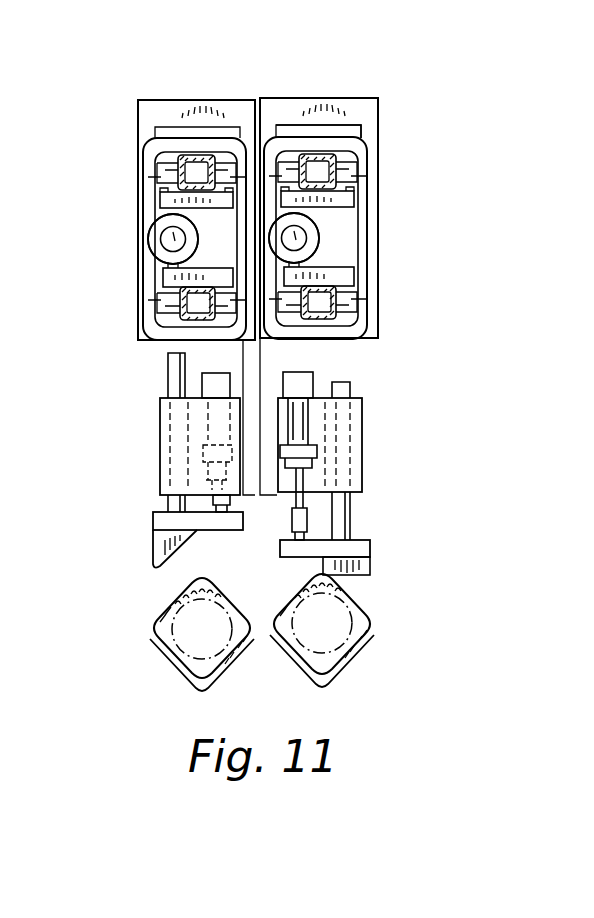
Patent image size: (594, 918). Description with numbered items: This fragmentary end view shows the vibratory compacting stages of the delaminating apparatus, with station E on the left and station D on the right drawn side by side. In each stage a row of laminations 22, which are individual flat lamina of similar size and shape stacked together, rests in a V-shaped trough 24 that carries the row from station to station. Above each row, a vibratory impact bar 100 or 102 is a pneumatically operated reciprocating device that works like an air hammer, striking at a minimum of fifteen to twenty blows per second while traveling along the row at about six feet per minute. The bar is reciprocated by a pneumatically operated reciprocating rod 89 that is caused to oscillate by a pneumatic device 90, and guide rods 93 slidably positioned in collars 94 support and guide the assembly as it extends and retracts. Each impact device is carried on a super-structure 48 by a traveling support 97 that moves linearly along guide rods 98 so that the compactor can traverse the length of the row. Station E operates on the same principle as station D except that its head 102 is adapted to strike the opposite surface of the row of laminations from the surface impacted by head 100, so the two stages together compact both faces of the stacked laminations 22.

The laminations 22 is at (283, 592).
The V-shaped troughs 24 is at (290, 668).
The super-structure 48 is at (348, 112).
The reciprocating rod 89 is at (210, 494).
The pneumatic device 90 is at (226, 383).
The guide rods 93 is at (175, 368).
The collars 94 is at (175, 430).
The traveling support 97 is at (143, 192).
The guide rods 98 is at (170, 237).
The vibratory impact bar 100 is at (370, 572).
The vibratory impact bar 102 is at (160, 556).
The station E is at (112, 133).
The station D is at (402, 111).